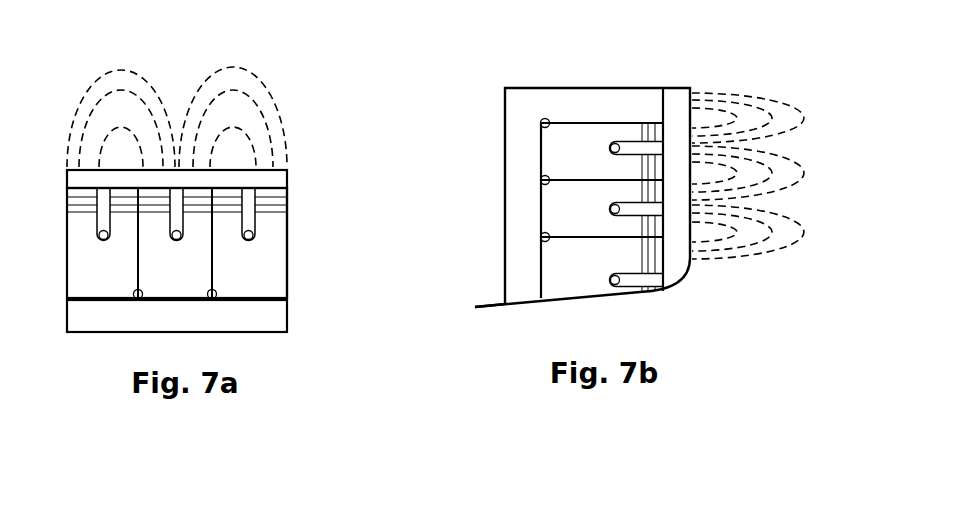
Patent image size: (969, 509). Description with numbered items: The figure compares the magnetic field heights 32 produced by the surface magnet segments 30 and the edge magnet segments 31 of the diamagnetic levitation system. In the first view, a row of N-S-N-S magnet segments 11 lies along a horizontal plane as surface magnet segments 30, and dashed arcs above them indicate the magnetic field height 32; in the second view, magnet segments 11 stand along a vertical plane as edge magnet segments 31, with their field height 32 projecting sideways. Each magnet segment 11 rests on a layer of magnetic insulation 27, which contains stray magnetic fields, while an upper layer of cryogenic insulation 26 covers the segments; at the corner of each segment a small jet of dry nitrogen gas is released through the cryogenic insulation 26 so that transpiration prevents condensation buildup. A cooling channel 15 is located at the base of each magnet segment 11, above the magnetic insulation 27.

In FIG. 7a, the magnet segment 11 is at (88, 268).
In FIG. 7b, the magnet segment 11 is at (590, 138).
In FIG. 7a, the cooling channel 15 is at (136, 297).
In FIG. 7b, the cooling channel 15 is at (549, 233).
In FIG. 7a, the cryogenic insulation 26 is at (277, 175).
In FIG. 7b, the cryogenic insulation 26 is at (680, 265).
In FIG. 7a, the magnetic insulation 27 is at (277, 315).
In FIG. 7b, the magnetic insulation 27 is at (527, 288).
In FIG. 7a, the surface magnet segment 30 is at (290, 280).
In FIG. 7b, the edge magnet segment 31 is at (531, 210).
In FIG. 7a, the magnetic field height 32 is at (224, 63).
In FIG. 7b, the magnetic field height 32 is at (805, 177).